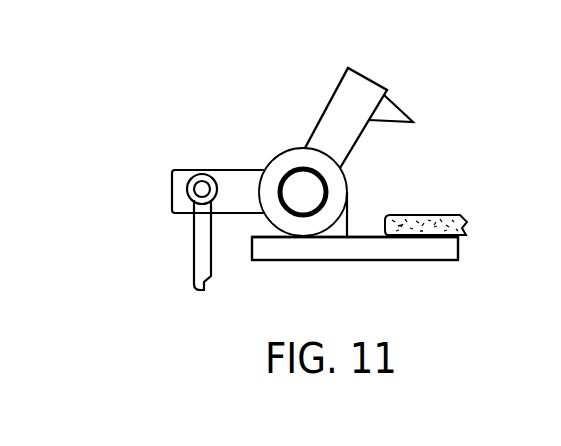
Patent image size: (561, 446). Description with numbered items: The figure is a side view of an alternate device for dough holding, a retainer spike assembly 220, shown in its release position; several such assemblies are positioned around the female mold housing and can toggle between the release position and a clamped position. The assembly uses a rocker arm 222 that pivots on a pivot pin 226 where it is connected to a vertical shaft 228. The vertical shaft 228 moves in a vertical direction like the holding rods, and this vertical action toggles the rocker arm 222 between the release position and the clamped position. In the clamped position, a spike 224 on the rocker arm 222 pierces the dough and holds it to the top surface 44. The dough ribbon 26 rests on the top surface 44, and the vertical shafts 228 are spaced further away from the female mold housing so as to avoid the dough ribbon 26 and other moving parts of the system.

The retainer spike assembly 220 is at (182, 94).
The rocker arm 222 is at (366, 76).
The spike 224 is at (412, 124).
The pivot pin 226 is at (293, 168).
The vertical shaft 228 is at (196, 259).
The top surface 44 is at (367, 237).
The dough ribbon 26 is at (468, 225).